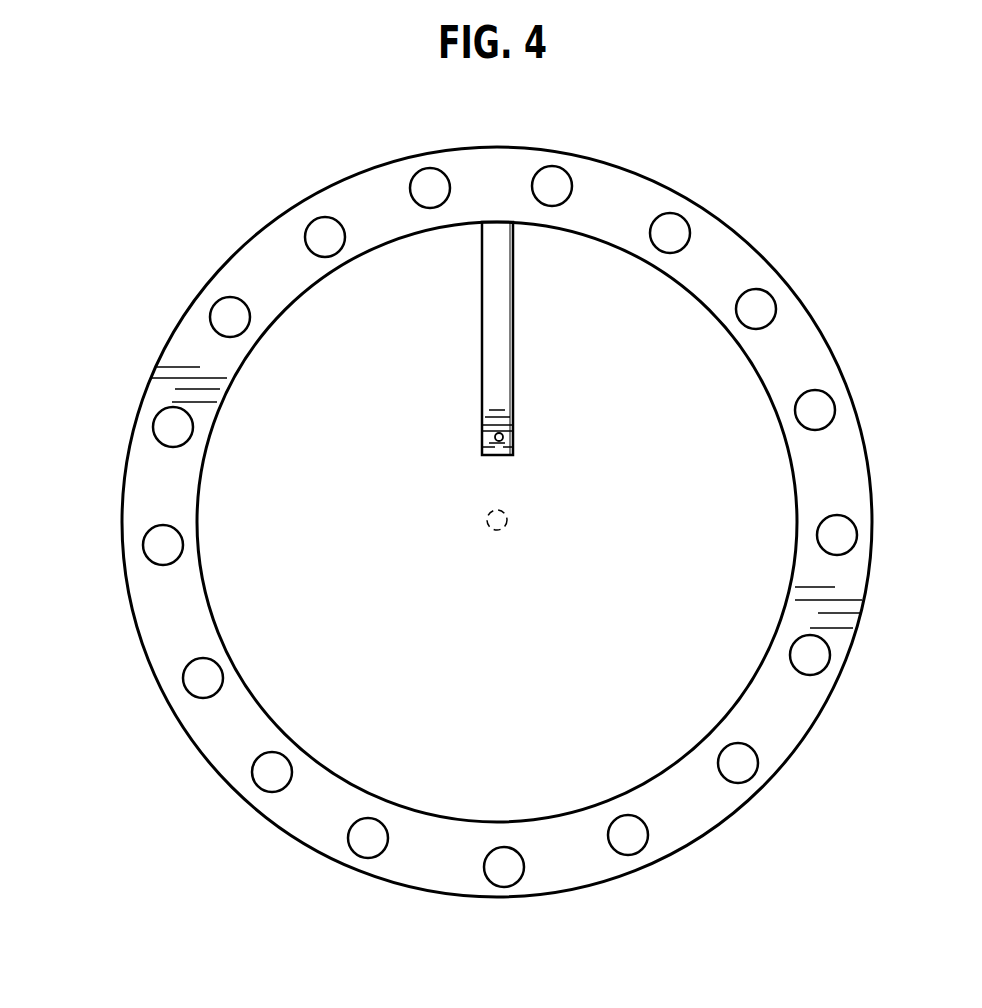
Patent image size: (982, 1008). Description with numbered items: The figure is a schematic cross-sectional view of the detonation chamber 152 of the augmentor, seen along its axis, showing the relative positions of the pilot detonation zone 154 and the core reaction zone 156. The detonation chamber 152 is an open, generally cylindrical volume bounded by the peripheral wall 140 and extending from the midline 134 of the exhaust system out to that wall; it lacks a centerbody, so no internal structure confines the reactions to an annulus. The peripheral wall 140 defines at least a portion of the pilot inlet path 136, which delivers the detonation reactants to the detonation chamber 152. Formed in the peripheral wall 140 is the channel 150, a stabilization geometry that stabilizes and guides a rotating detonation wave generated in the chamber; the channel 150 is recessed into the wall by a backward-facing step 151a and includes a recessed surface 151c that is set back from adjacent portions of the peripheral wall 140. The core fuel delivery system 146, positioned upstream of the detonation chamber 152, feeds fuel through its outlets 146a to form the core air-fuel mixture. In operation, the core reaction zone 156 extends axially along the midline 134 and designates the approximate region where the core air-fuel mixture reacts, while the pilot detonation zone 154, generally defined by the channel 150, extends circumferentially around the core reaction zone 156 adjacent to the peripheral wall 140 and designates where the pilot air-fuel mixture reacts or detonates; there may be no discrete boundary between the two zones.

The midline 134 is at (488, 518).
The pilot inlet path 136 is at (550, 182).
The peripheral wall 140 is at (193, 518).
The core fuel delivery system 146 is at (545, 338).
The outlets 146a is at (510, 435).
The channel 150 is at (467, 503).
The backward-facing step 151a is at (378, 215).
The recessed surface 151c is at (228, 260).
The detonation chamber 152 is at (600, 635).
The pilot detonation zone 154 is at (797, 357).
The core reaction zone 156 is at (597, 494).